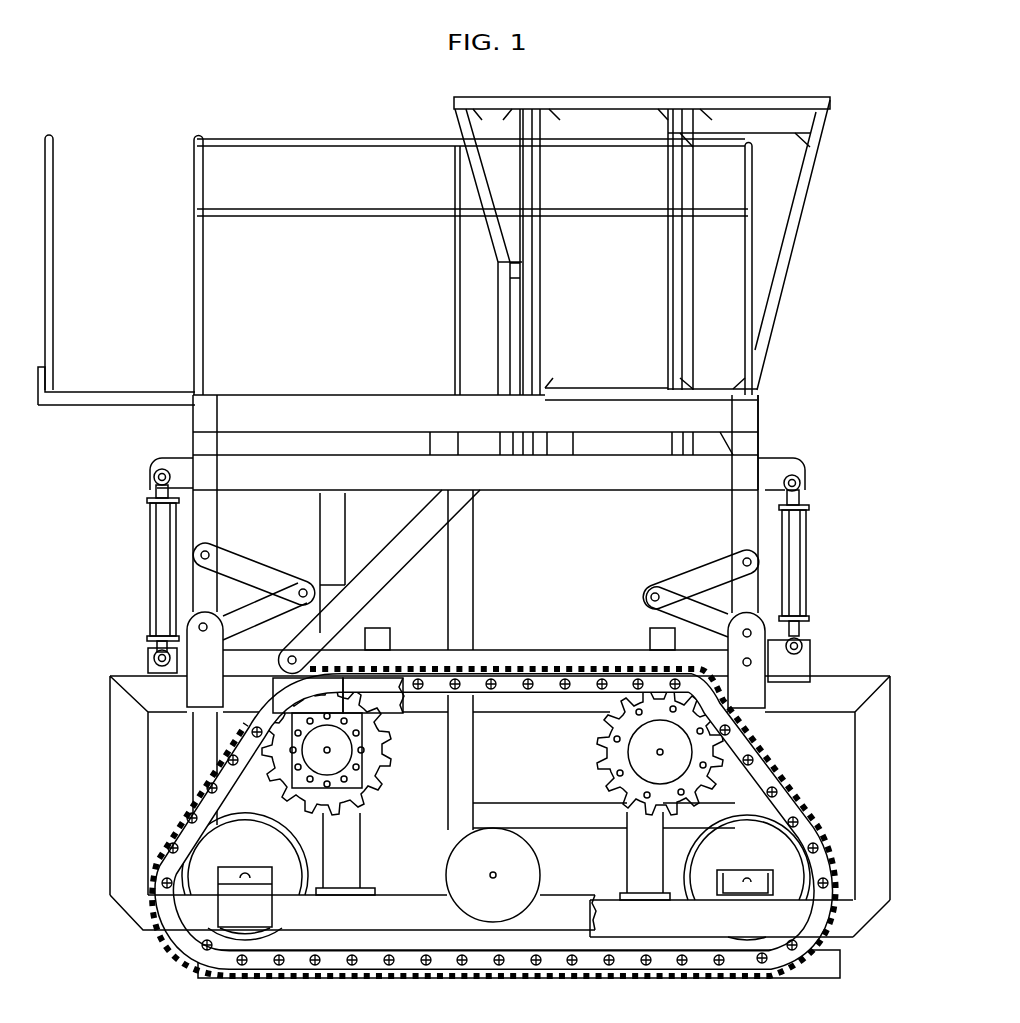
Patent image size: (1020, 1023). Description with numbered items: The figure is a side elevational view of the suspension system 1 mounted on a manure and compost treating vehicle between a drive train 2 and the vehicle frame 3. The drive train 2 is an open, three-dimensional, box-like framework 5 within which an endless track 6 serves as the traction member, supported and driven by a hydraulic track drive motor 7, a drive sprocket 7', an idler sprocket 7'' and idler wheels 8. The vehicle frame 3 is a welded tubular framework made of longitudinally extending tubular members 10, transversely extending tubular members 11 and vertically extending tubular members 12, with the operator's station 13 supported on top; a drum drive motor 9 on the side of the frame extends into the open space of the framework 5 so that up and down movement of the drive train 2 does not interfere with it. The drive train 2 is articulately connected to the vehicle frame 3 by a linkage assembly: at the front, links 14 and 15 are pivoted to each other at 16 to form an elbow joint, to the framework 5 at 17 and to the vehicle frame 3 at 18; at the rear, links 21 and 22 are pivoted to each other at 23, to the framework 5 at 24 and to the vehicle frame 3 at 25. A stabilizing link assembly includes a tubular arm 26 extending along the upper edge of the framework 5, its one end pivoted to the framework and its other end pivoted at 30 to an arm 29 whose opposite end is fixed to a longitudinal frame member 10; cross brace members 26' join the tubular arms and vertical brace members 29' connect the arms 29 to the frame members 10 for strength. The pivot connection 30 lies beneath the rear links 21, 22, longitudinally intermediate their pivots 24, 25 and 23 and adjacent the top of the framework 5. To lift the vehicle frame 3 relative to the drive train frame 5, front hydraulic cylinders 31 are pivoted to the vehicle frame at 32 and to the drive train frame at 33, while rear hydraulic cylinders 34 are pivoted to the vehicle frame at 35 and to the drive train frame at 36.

The suspension system 1 is at (476, 604).
The drive train 2 is at (104, 773).
The vehicle frame 3 is at (138, 415).
The open framework 5 is at (378, 703).
The endless track 6 is at (548, 966).
The hydraulic track drive motor 7 is at (338, 790).
The drive sprocket 7' is at (356, 757).
The idler sprocket 7'' is at (604, 794).
The idler wheels 8 is at (287, 872).
The drum drive motor 9 is at (527, 858).
The longitudinally extending tubular members 10 is at (286, 404).
The transversely extending tubular members 11 is at (205, 462).
The vertically extending tubular members 12 is at (205, 595).
The operator's station 13 is at (797, 290).
The links 14 is at (710, 625).
The links 15 is at (695, 575).
The pivot connection 16 is at (650, 602).
The pivot connection 17 is at (746, 661).
The pivot connection 18 is at (742, 548).
The links 21 is at (242, 620).
The links 22 is at (255, 575).
The pivot connection 23 is at (335, 565).
The pivot connection 24 is at (203, 631).
The pivot connection 25 is at (210, 548).
The tubular arm 26 is at (475, 639).
The cross brace members 26' is at (520, 637).
The arms 29 is at (379, 581).
The vertical brace members 29' is at (355, 563).
The pivot connection 30 is at (308, 695).
The hydraulic cylinders 31 is at (798, 527).
The pivot connection 32 is at (801, 482).
The pivot connection 33 is at (803, 648).
The hydraulic cylinders 34 is at (158, 536).
The pivot connection 35 is at (155, 474).
The pivot connection 36 is at (154, 658).